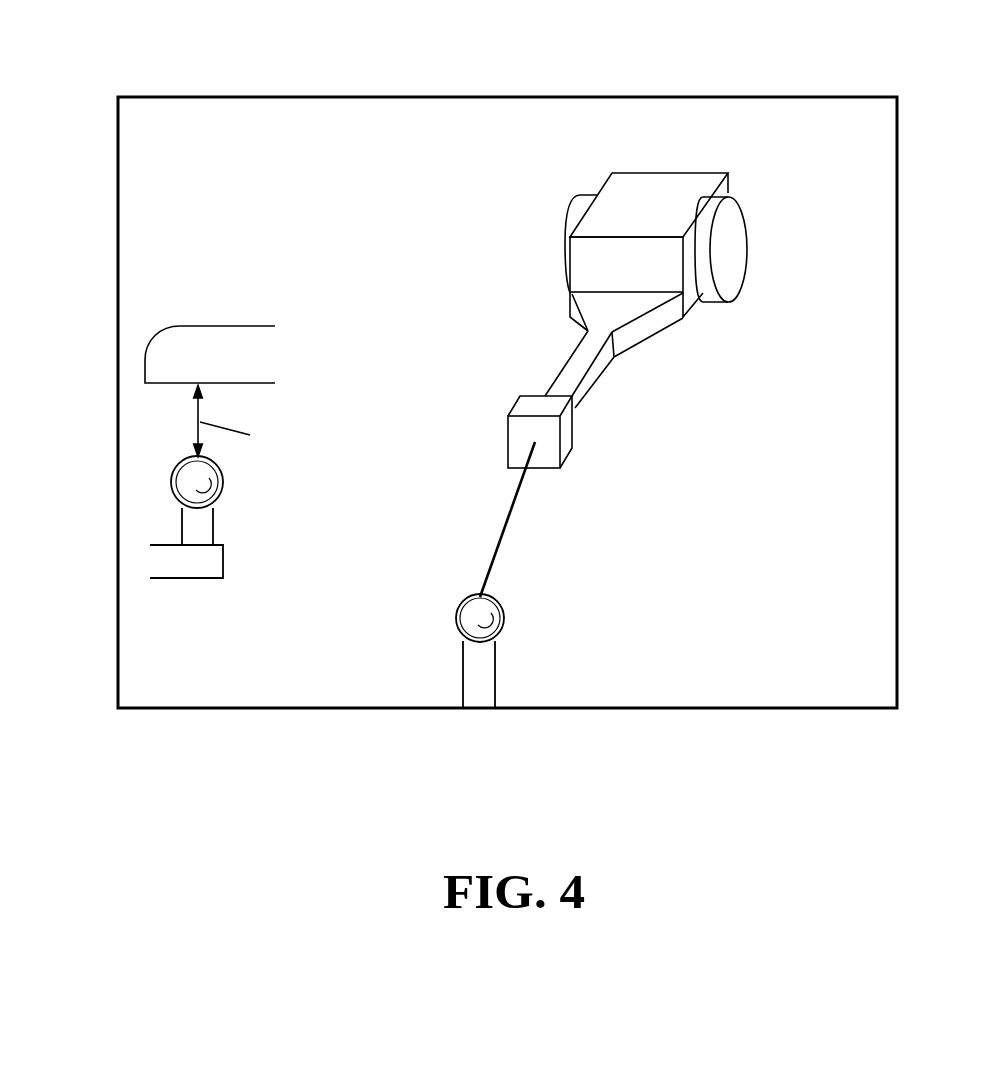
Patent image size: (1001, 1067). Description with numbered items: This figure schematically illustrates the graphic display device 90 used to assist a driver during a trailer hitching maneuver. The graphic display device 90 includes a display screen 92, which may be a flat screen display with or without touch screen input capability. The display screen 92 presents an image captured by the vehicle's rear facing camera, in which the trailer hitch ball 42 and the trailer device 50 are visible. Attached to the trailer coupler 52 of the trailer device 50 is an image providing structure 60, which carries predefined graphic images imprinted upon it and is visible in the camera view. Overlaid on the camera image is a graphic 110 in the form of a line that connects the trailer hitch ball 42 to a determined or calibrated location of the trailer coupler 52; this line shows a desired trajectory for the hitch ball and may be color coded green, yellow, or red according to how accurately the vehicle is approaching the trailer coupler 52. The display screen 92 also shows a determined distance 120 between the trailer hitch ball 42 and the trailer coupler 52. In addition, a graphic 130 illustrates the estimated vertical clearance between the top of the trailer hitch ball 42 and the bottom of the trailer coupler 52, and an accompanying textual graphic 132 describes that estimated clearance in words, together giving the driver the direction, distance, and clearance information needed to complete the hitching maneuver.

The trailer hitch ball 42 is at (503, 623).
The trailer device 50 is at (672, 173).
The trailer coupler 52 is at (552, 468).
The image providing structure 60 is at (572, 448).
The graphic display device 90 is at (768, 97).
The display screen 92 is at (327, 672).
The graphic 110 is at (510, 520).
The determined distance 120 is at (310, 142).
The graphic 130 is at (170, 363).
The textual graphic 132 is at (302, 503).